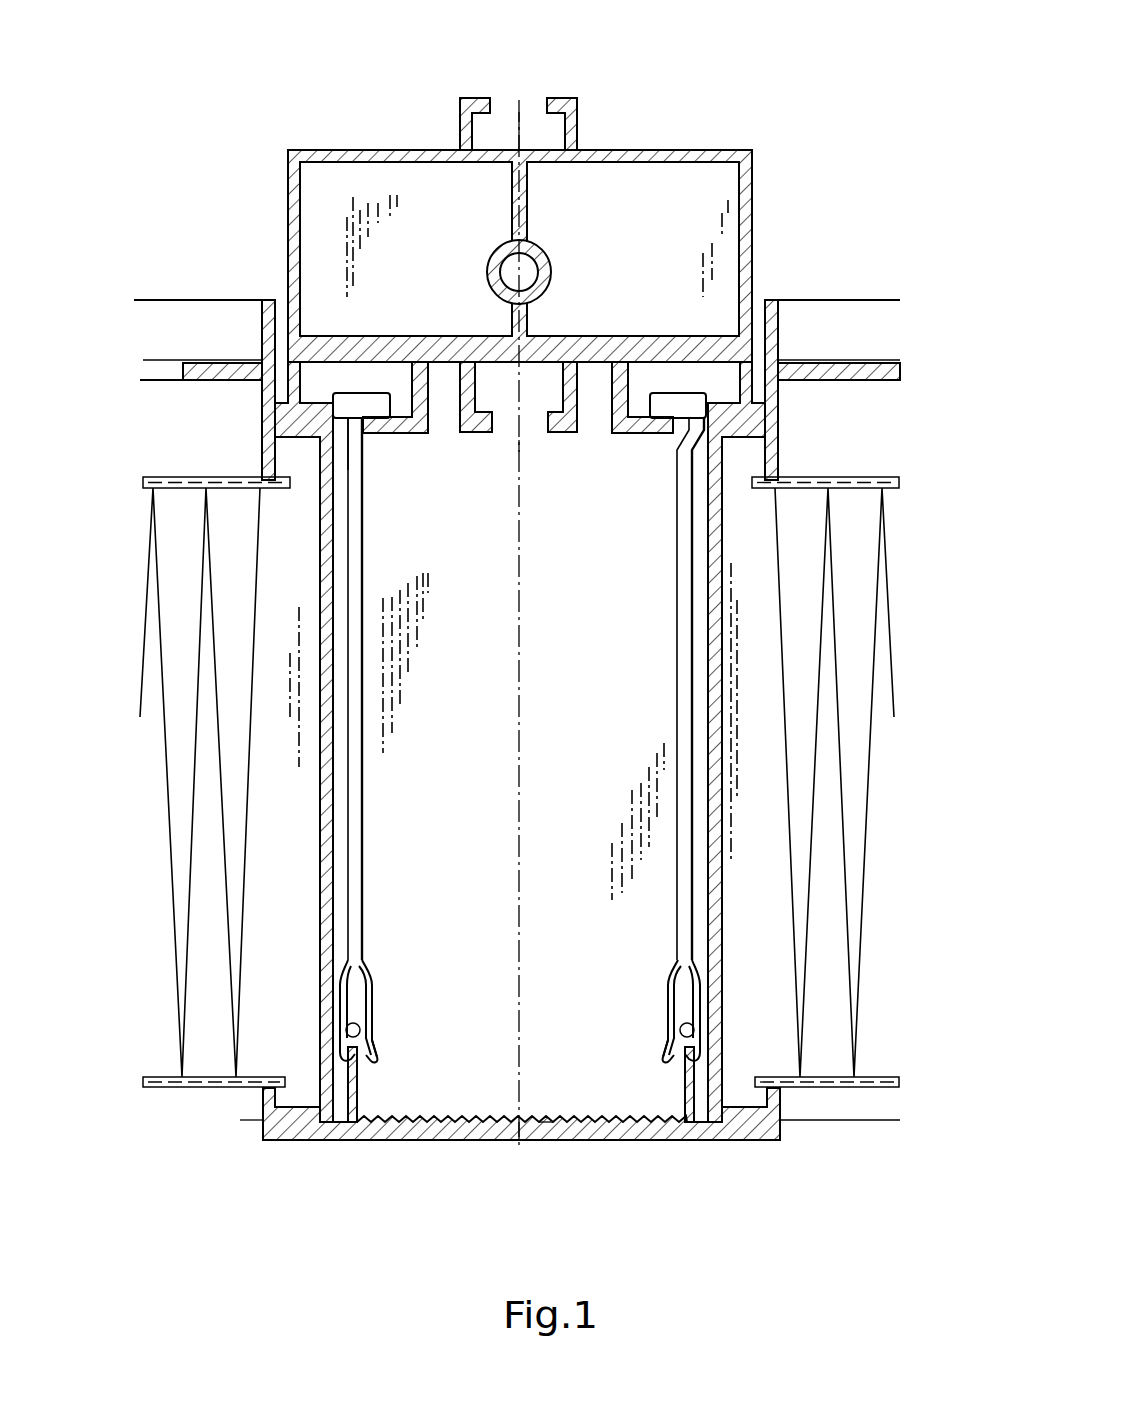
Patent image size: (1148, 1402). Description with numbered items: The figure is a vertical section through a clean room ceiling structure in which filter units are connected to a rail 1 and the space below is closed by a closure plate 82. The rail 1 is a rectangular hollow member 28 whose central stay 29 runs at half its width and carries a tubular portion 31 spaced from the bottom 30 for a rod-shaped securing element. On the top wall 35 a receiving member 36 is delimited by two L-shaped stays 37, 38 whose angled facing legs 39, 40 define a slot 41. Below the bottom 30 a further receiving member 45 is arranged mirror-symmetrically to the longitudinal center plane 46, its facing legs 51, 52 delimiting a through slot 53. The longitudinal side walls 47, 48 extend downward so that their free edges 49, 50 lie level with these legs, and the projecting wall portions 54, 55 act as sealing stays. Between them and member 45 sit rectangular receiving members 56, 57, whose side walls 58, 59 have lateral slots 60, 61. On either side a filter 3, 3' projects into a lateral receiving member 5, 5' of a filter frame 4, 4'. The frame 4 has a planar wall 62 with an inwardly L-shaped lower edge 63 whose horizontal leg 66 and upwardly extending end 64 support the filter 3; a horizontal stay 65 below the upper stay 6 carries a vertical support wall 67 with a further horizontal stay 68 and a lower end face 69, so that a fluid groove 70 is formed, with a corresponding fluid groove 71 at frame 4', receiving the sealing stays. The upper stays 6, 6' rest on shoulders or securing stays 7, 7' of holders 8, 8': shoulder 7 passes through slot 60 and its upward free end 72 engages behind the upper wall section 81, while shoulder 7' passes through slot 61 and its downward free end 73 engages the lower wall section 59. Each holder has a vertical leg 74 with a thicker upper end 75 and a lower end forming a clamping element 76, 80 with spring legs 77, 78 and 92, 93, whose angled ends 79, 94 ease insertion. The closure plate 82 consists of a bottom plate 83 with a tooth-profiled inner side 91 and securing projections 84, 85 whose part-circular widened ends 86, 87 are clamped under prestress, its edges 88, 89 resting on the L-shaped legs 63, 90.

The rail 1 is at (752, 135).
The filter 3 is at (857, 774).
The filter 3' is at (183, 774).
The filter frame 4 is at (848, 244).
The filter frame 4' is at (185, 258).
The lateral receiving member 5 is at (862, 782).
The lateral receiving member 5' is at (176, 782).
The upper stay 6 is at (805, 335).
The upper stay 6' is at (231, 390).
The shoulder or securing stay 7 is at (727, 367).
The shoulder or securing stay 7' is at (395, 337).
The holder 8 is at (820, 689).
The holder 8' is at (226, 689).
The rectangular hollow member 28 is at (686, 147).
The central stay 29 is at (529, 193).
The bottom 30 is at (550, 350).
The tubular portion 31 is at (548, 265).
The top wall 35 is at (602, 150).
The receiving member 36 is at (581, 100).
The L-shaped stay 37 is at (580, 112).
The L-shaped stay 38 is at (458, 108).
The angled leg 39 is at (562, 97).
The angled leg 40 is at (469, 97).
The slot 41 is at (515, 110).
The receiving member 45 is at (555, 436).
The longitudinal center plane 46 is at (525, 793).
The longitudinal side wall 47 is at (754, 162).
The longitudinal side wall 48 is at (290, 170).
The free edge 49 is at (762, 437).
The free edge 50 is at (283, 431).
The facing leg 51 is at (572, 434).
The facing leg 52 is at (482, 433).
The through slot 53 is at (517, 442).
The side wall portion 54 is at (780, 362).
The side wall portion 55 is at (300, 366).
The receiving member 56 is at (649, 437).
The receiving member 57 is at (385, 437).
The side wall 58 is at (790, 378).
The side wall 59 is at (350, 440).
The lateral slot 60 is at (745, 330).
The lateral slot 61 is at (350, 383).
The planar wall 62 is at (724, 786).
The lower edge 63 is at (745, 1142).
The upwardly extending end 64 is at (781, 1103).
The horizontal stay 65 is at (662, 402).
The horizontal leg 66 is at (782, 1142).
The vertical support wall 67 is at (780, 315).
The horizontal stay 68 is at (790, 372).
The lower end face 69 is at (698, 452).
The fluid groove 70 is at (762, 425).
The fluid groove 71 is at (270, 408).
The free end 72 is at (662, 375).
The free end 73 is at (372, 412).
The vertical leg 74 is at (678, 765).
The upper end 75 is at (742, 402).
The lower end / clamping element 76 is at (702, 962).
The clamping or spring leg 77 is at (702, 1005).
The clamping or spring leg 78 is at (665, 994).
The outwardly extending end 79 is at (662, 1060).
The lower end / clamping element 80 is at (372, 948).
The upper wall section 81 is at (672, 385).
The closure plate 82 is at (445, 1142).
The bottom plate 83 is at (555, 1142).
The securing projection 84 is at (695, 1081).
The securing projection 85 is at (358, 1076).
The widening free end 86 is at (680, 1029).
The widening free end 87 is at (360, 1023).
The edge 88 is at (700, 1142).
The edge 89 is at (335, 1142).
The L-shaped leg 90 is at (305, 1142).
The inner side 91 is at (519, 1142).
The spring leg 92 is at (379, 986).
The spring leg 93 is at (342, 984).
The angled free end 94 is at (381, 1059).